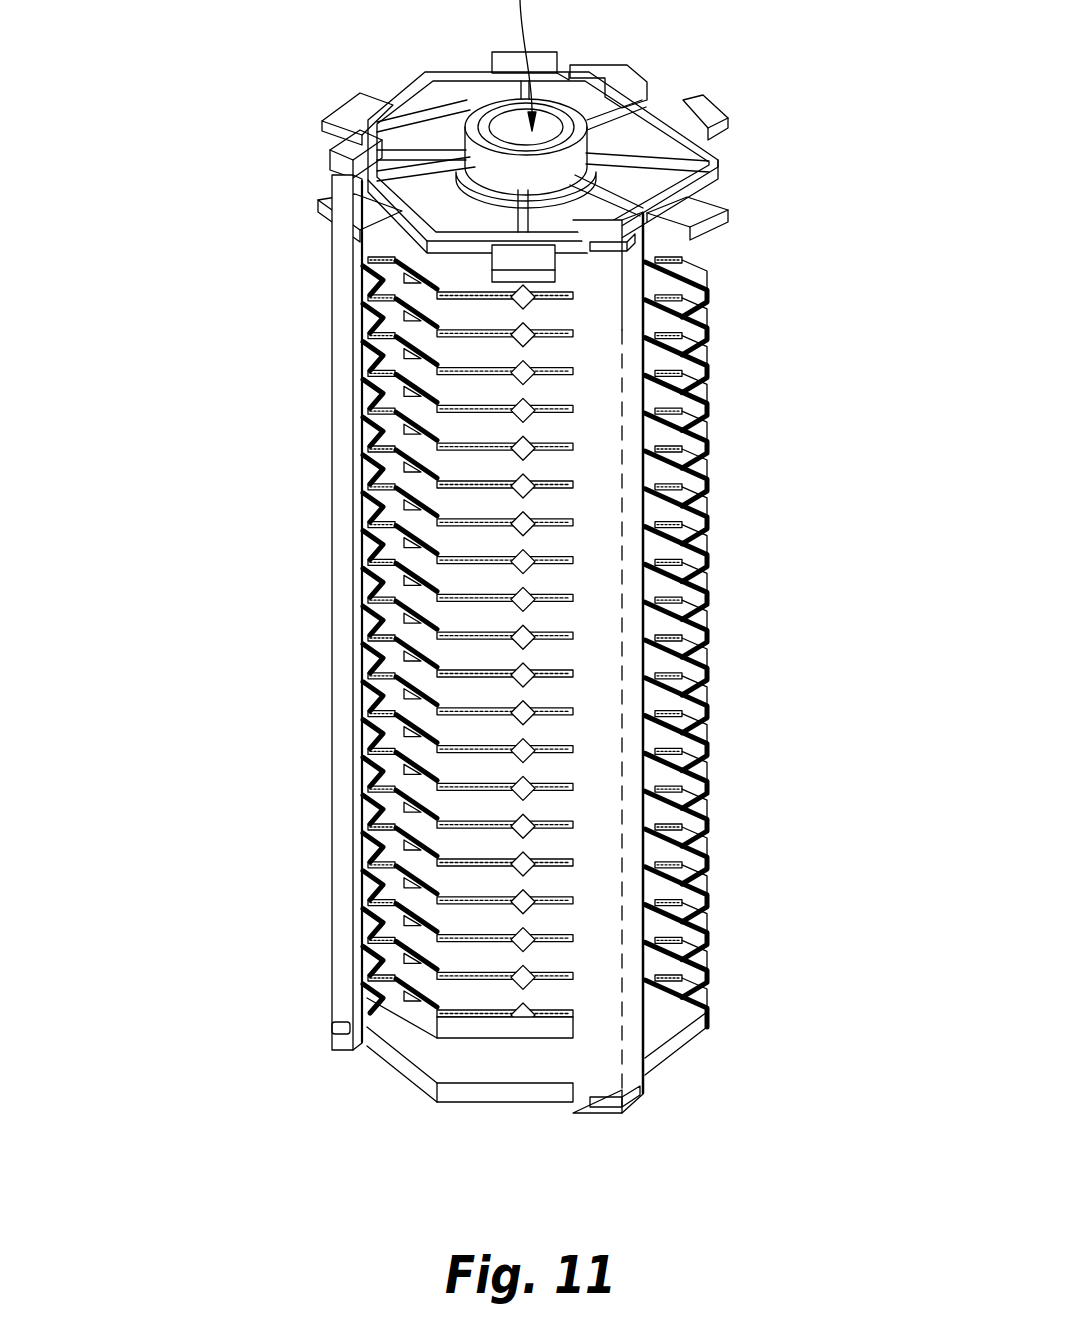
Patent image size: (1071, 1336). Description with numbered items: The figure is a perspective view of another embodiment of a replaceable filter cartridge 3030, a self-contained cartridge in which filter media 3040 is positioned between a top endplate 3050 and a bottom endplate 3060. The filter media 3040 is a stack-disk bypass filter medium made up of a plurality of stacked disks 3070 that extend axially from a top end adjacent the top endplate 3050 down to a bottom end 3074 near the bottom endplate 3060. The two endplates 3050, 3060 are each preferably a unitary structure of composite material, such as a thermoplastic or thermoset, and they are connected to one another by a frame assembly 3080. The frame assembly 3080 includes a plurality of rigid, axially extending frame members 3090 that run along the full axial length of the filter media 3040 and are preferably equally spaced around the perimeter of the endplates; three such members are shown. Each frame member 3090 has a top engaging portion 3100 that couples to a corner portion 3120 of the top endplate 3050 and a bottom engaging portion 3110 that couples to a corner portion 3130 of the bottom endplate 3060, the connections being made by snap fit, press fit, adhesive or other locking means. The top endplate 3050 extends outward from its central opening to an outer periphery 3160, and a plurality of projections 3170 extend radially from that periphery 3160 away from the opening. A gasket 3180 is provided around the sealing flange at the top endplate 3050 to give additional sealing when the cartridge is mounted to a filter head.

The replaceable filter cartridge 3030 is at (215, 645).
The filter media 3040 is at (777, 519).
The top endplate 3050 is at (665, 140).
The bottom endplate 3060 is at (684, 1010).
The stacked disks 3070 is at (700, 352).
The bottom end 3074 is at (702, 912).
The frame assembly 3080 is at (309, 478).
The frame members 3090 is at (340, 400).
The top engaging portion 3100 is at (625, 80).
The bottom engaging portion 3110 is at (333, 1040).
The corner portion 3120 is at (719, 163).
The corner portion 3130 is at (435, 1095).
The outer periphery 3160 is at (710, 182).
The projections 3170 is at (350, 103).
The gasket 3180 is at (482, 103).